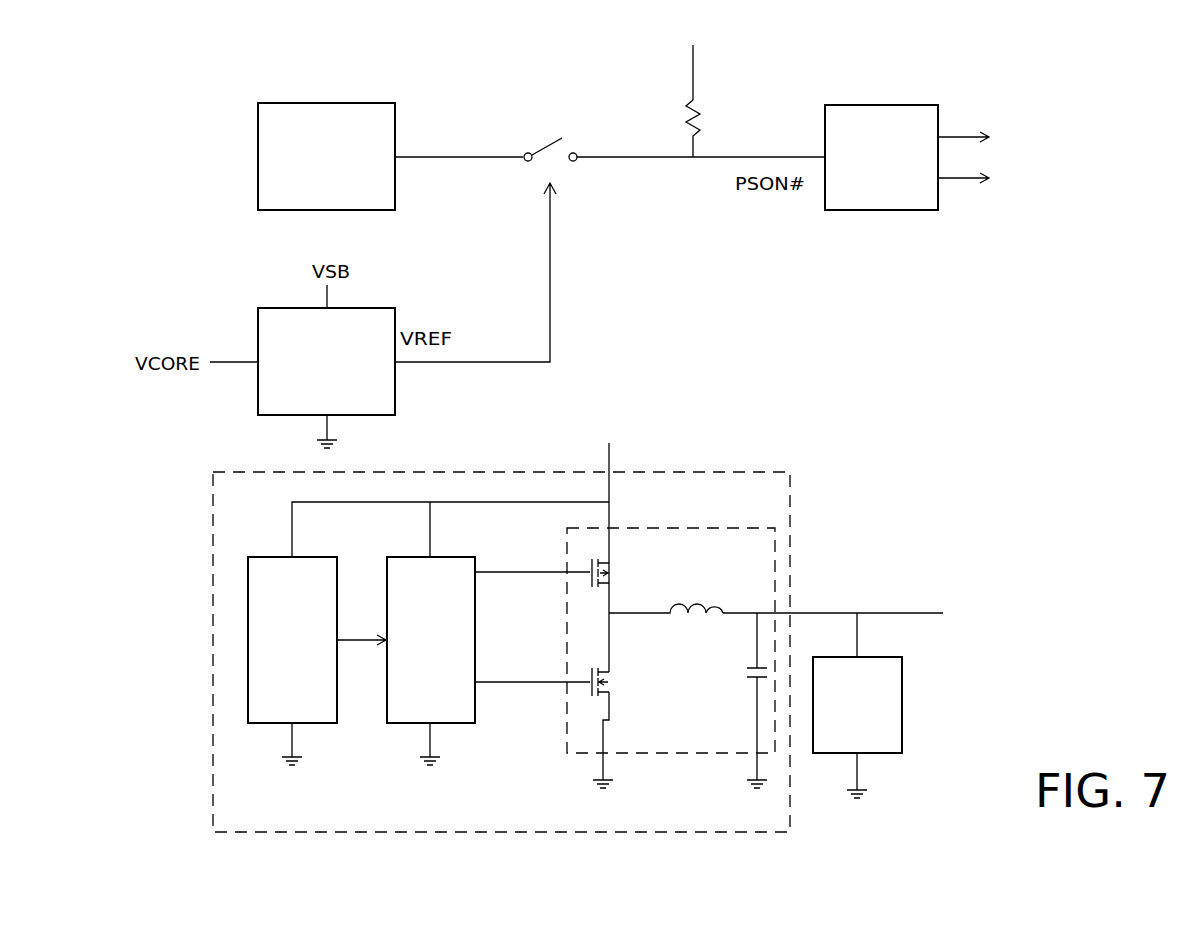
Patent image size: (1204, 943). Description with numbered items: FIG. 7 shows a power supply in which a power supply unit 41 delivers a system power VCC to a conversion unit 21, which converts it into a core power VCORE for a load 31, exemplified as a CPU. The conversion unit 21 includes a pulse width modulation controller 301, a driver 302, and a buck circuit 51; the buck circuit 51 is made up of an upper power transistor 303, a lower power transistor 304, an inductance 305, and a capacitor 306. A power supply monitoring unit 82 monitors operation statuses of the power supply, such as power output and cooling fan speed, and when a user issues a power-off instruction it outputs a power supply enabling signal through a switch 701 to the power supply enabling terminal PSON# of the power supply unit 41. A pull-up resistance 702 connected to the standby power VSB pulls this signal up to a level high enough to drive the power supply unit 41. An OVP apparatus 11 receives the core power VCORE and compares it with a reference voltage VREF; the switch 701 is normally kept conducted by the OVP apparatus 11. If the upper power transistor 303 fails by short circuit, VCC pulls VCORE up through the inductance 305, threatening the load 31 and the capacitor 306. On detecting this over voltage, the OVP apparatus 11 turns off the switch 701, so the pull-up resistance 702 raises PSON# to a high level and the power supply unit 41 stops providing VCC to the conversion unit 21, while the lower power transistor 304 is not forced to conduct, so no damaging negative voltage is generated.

The power supply monitoring unit 82 is at (258, 157).
The switch 701 is at (548, 137).
The pull-up resistance 702 is at (702, 110).
The power supply unit 41 is at (870, 210).
The OVP apparatus 11 is at (395, 400).
The conversion unit 21 is at (792, 492).
The pulse width modulation controller 301 is at (318, 725).
The driver 302 is at (460, 725).
The upper power transistor 303 is at (608, 567).
The lower power transistor 304 is at (610, 677).
The inductance 305 is at (704, 598).
The capacitor 306 is at (747, 670).
The buck circuit 51 is at (687, 755).
The load 31 is at (903, 742).